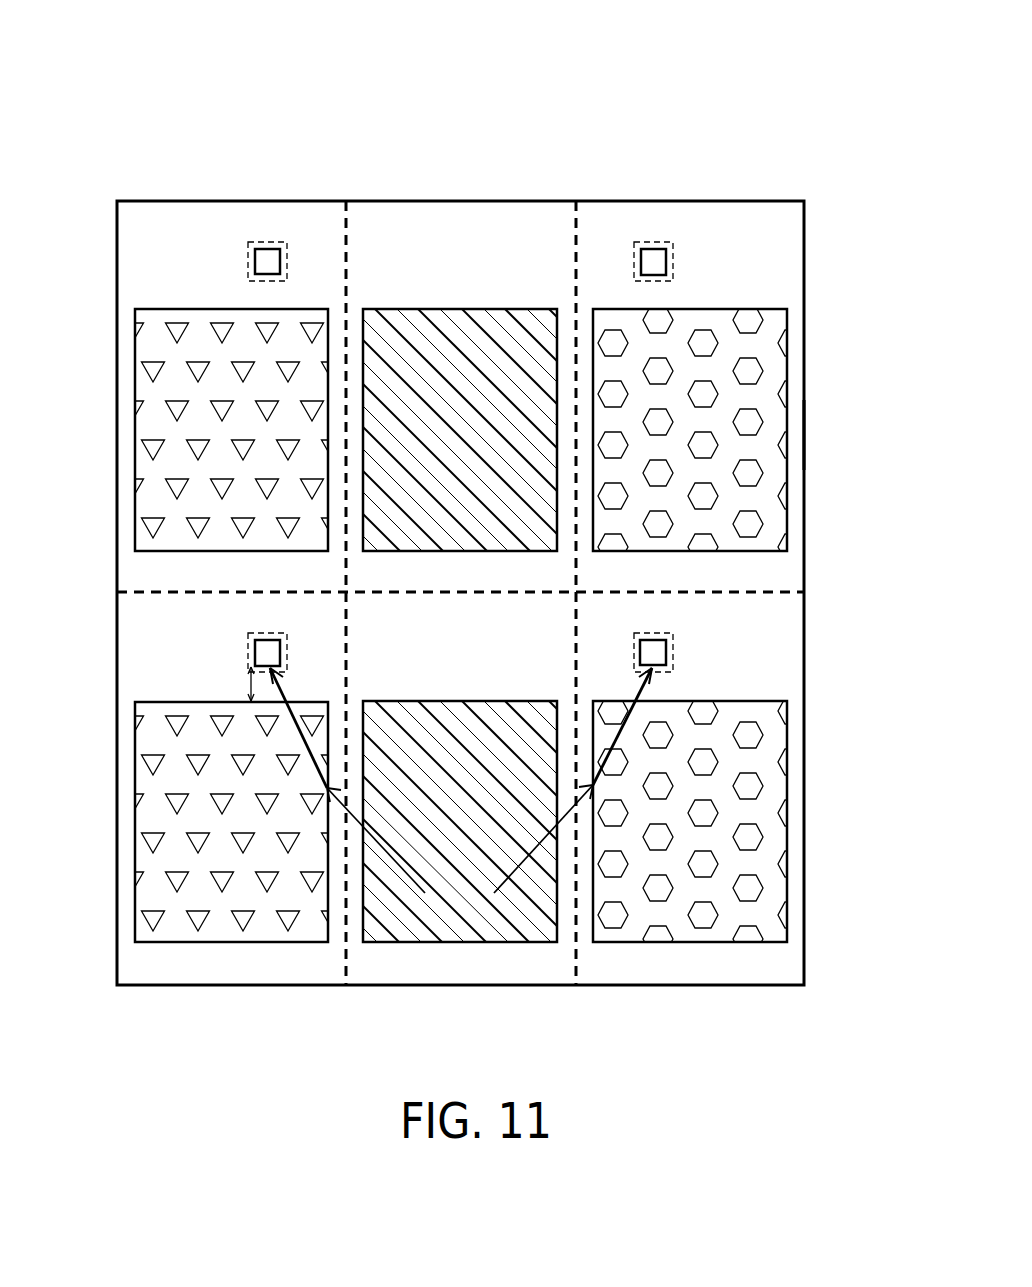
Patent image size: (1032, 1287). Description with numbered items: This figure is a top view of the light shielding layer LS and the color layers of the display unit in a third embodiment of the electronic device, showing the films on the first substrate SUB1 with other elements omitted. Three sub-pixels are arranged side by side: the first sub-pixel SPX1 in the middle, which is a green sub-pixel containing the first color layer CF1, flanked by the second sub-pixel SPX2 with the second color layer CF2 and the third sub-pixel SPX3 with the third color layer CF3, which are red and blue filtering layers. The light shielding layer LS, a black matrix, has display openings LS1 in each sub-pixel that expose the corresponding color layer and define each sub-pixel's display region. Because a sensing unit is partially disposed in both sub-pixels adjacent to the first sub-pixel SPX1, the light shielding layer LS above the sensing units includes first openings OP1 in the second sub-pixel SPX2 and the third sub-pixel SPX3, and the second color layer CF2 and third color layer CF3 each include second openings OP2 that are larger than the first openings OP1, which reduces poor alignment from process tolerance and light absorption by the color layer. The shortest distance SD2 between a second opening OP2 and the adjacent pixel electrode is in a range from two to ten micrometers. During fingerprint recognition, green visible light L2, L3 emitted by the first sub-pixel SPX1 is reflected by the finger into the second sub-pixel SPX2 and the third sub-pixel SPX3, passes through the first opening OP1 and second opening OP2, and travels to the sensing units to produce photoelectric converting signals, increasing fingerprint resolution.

The light shielding layer LS is at (804, 288).
The display opening LS1 is at (787, 368).
The first substrate SUB1 is at (804, 431).
The first sub-pixel SPX1 is at (576, 98).
The second sub-pixel SPX2 is at (346, 98).
The third sub-pixel SPX3 is at (804, 98).
The first color layer CF1 is at (536, 309).
The second color layer CF2 is at (173, 309).
The third color layer CF3 is at (772, 309).
The first opening OP1 is at (280, 249).
The second opening OP2 is at (248, 265).
The shortest distance SD2 is at (250, 688).
The visible light L2 is at (353, 815).
The visible light L3 is at (566, 815).